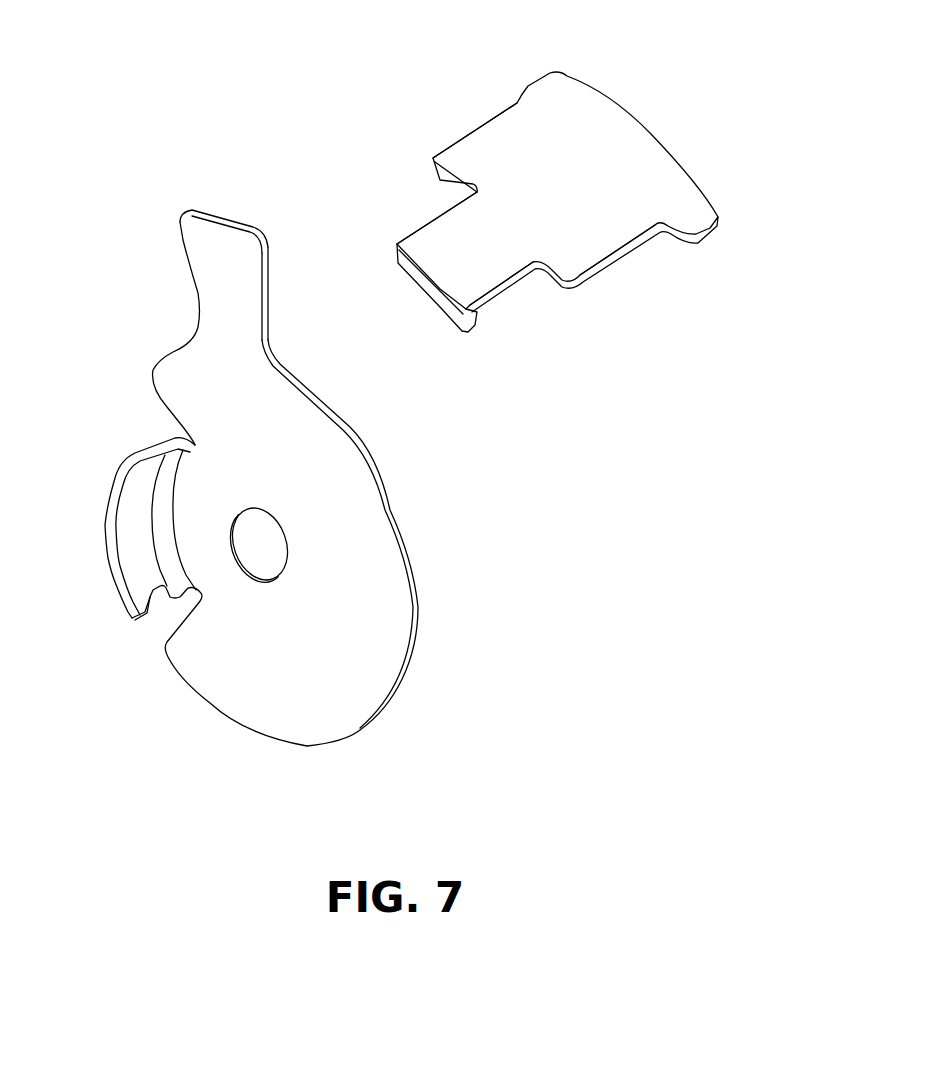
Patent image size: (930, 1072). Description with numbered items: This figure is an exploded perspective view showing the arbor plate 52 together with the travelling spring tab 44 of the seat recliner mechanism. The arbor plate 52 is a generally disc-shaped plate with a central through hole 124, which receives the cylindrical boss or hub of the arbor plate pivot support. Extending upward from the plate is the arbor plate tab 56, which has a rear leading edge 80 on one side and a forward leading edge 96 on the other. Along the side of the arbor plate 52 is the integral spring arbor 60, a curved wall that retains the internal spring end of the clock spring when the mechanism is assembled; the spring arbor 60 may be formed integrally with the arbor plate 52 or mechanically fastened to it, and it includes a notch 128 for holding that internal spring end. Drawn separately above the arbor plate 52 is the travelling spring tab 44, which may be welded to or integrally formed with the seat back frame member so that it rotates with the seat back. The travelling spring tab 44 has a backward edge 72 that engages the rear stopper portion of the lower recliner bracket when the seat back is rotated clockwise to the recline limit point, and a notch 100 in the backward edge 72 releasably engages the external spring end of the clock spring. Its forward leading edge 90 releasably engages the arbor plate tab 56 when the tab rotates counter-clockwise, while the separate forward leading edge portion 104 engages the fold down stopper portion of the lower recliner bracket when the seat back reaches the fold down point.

The travelling spring tab 44 is at (587, 157).
The arbor plate 52 is at (388, 622).
The arbor plate tab 56 is at (217, 247).
The spring arbor 60 is at (125, 522).
The backward edge 72 is at (610, 262).
The rear leading edge 80 is at (272, 283).
The forward leading edge 90 is at (422, 223).
The forward leading edge 96 is at (187, 253).
The notch 100 is at (495, 288).
The separate forward leading edge portion 104 is at (502, 115).
The central through hole 124 is at (287, 533).
The notch 128 is at (135, 588).